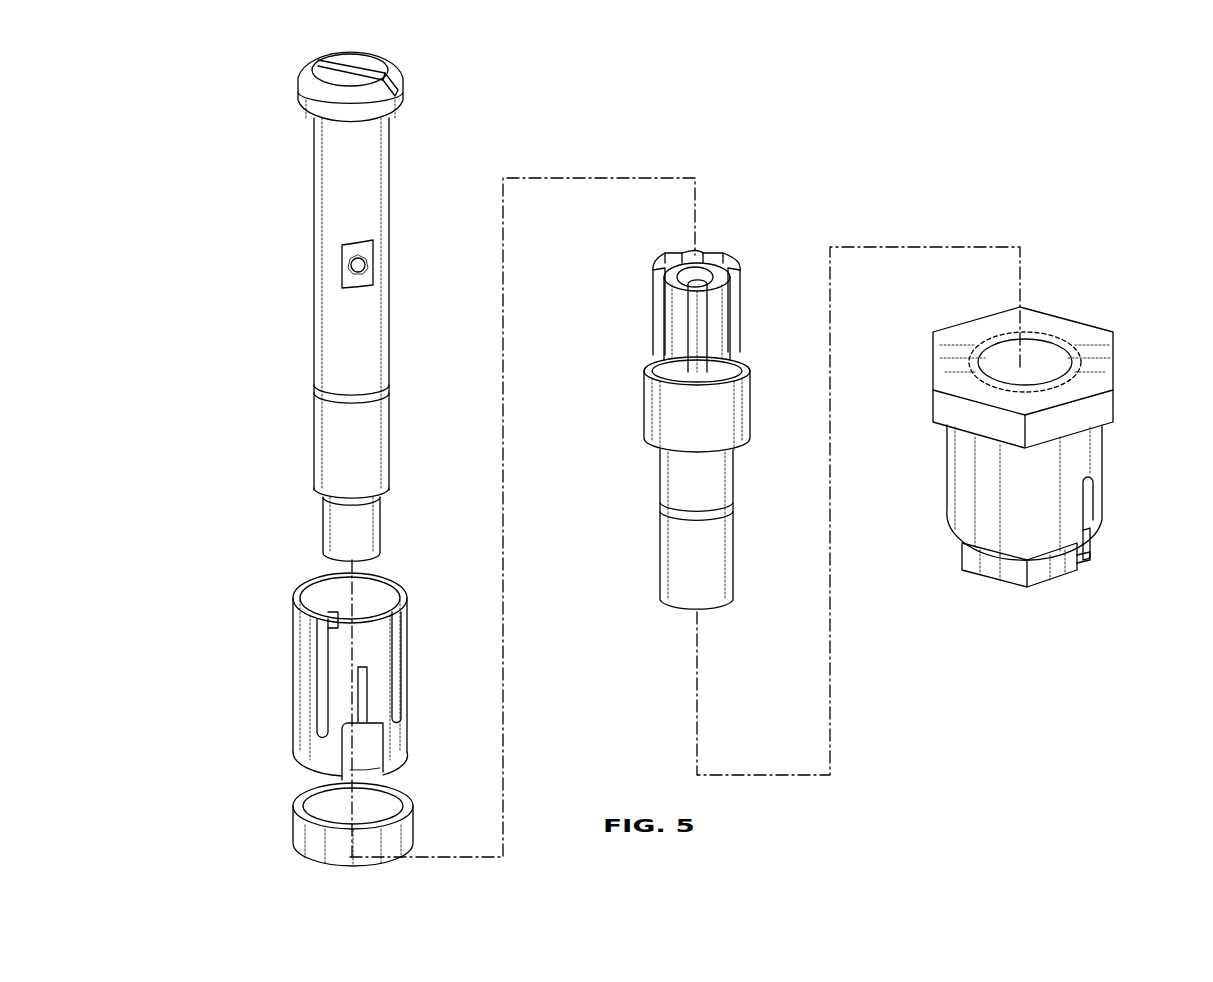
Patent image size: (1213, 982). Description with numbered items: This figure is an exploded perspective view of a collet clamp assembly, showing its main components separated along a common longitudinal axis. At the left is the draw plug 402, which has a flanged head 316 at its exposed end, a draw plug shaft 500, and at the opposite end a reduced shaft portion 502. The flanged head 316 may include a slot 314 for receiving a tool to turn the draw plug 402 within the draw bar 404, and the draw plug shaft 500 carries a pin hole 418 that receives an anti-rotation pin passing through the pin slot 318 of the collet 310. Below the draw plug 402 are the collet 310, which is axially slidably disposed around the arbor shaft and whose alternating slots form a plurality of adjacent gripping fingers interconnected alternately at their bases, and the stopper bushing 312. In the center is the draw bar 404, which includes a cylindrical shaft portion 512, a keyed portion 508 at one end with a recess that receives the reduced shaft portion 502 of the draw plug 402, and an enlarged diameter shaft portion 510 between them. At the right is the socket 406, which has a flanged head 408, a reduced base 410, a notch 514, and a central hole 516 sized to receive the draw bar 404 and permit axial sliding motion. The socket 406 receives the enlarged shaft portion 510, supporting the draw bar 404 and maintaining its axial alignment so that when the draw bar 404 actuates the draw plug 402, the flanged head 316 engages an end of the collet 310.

The collet 310 is at (335, 682).
The stopper bushing 312 is at (403, 818).
The slot 314 is at (392, 85).
The flanged head 316 is at (378, 55).
The pin slot 318 is at (367, 745).
The draw plug 402 is at (320, 155).
The draw bar 404 is at (667, 483).
The socket 406 is at (1095, 445).
The flanged head 408 is at (1038, 361).
The reduced base 410 is at (1015, 577).
The pin hole 418 is at (364, 263).
The draw plug shaft 500 is at (320, 396).
The reduced shaft portion 502 is at (320, 526).
The keyed portion 508 is at (735, 268).
The enlarged diameter shaft portion 510 is at (742, 410).
The cylindrical shaft portion 512 is at (718, 555).
The notch 514 is at (1088, 507).
The hole 516 is at (1040, 347).